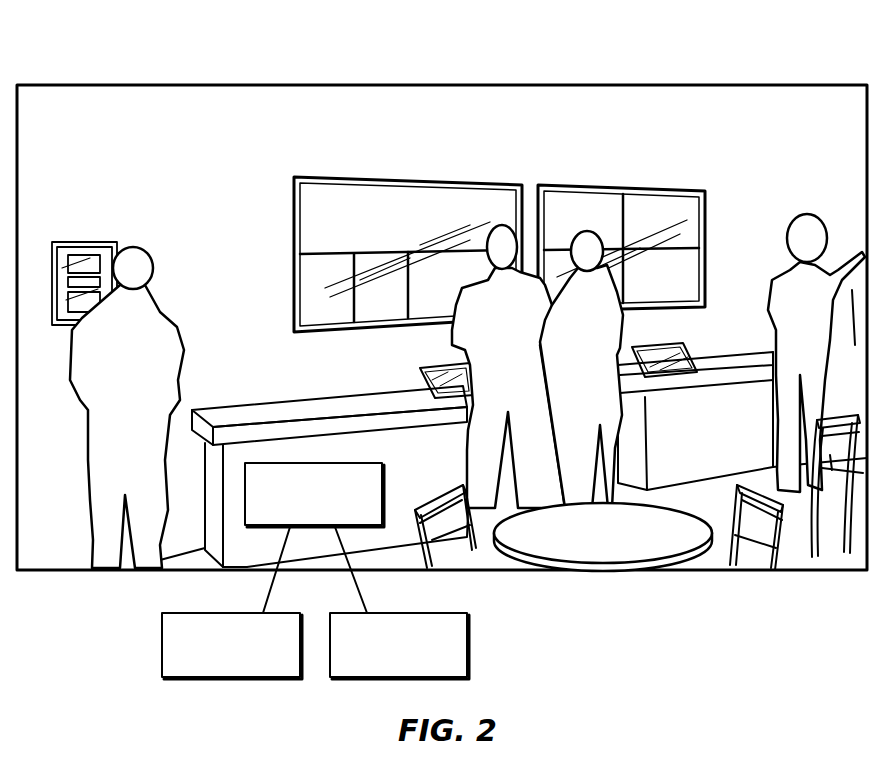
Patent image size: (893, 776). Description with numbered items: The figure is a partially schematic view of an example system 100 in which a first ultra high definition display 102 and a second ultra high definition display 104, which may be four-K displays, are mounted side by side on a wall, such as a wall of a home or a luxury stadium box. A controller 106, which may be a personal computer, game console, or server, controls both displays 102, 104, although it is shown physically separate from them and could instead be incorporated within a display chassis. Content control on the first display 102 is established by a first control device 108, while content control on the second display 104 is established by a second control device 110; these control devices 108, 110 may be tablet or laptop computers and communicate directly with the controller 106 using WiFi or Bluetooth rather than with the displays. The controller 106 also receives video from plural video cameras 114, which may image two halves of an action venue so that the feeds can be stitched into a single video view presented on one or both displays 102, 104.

The system 100 is at (176, 47).
The first ultra high definition display 102 is at (372, 240).
The second ultra high definition display 104 is at (656, 233).
The controller 106 is at (356, 463).
The first control device 108 is at (435, 370).
The second control device 110 is at (672, 345).
The video cameras 114 is at (203, 613).